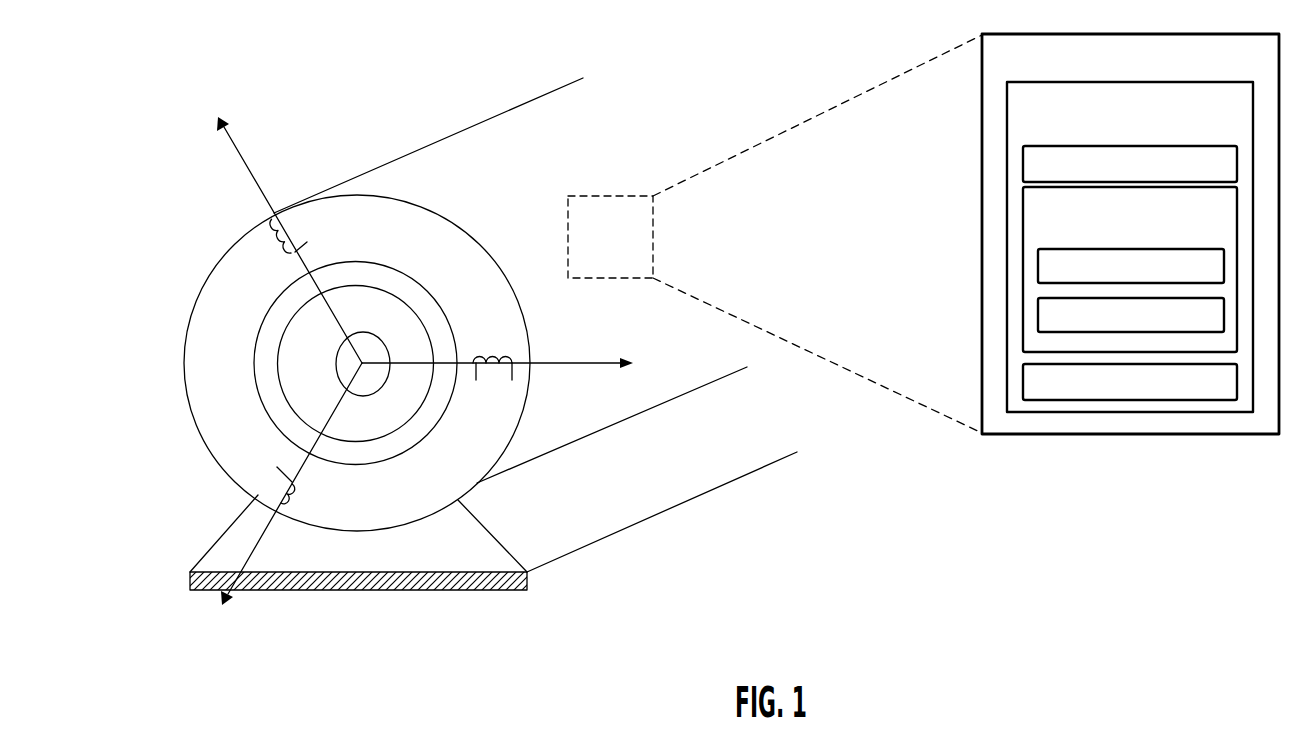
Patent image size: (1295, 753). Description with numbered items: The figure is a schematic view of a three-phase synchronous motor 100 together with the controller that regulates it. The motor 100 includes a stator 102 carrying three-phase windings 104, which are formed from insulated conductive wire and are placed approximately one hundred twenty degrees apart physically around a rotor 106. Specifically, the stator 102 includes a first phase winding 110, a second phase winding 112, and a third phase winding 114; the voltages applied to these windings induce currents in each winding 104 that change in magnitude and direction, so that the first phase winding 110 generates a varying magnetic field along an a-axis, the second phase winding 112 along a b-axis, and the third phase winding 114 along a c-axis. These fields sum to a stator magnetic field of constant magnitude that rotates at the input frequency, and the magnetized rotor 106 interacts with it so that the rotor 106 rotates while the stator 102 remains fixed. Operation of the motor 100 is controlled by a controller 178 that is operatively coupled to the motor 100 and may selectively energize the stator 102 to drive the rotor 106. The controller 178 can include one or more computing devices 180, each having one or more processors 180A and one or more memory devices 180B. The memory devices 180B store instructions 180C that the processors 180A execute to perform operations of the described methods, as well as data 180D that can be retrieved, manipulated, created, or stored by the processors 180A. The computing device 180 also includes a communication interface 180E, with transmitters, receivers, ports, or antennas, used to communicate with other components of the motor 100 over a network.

The synchronous motor 100 is at (388, 80).
The stator 102 is at (190, 378).
The three-phase windings 104 is at (240, 242).
The rotor 106 is at (380, 441).
The first phase winding 110 is at (493, 352).
The second phase winding 112 is at (294, 249).
The third phase winding 114 is at (253, 493).
The controller 178 is at (1149, 74).
The computing device 180 is at (1149, 127).
The processor 180A is at (1154, 177).
The memory device 180B is at (1154, 230).
The instructions 180C is at (1154, 280).
The data 180D is at (1154, 329).
The communication interface 180E is at (1154, 394).